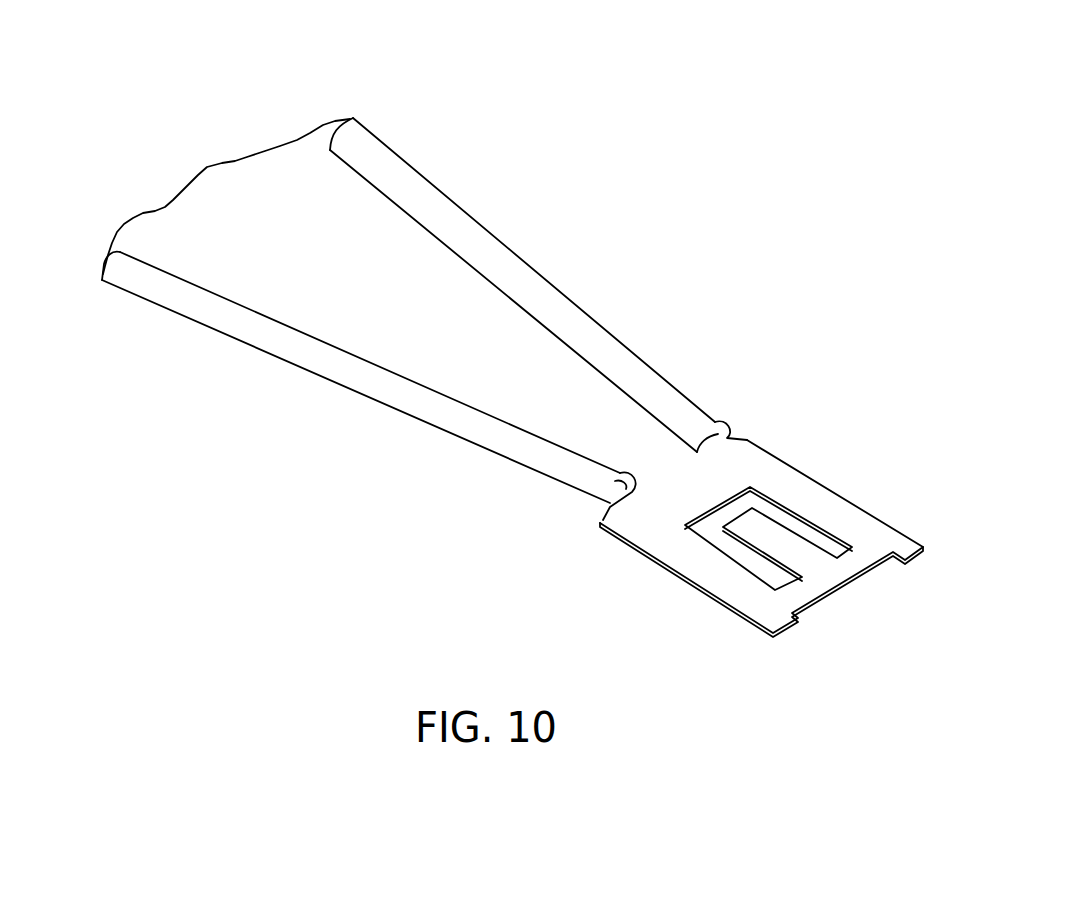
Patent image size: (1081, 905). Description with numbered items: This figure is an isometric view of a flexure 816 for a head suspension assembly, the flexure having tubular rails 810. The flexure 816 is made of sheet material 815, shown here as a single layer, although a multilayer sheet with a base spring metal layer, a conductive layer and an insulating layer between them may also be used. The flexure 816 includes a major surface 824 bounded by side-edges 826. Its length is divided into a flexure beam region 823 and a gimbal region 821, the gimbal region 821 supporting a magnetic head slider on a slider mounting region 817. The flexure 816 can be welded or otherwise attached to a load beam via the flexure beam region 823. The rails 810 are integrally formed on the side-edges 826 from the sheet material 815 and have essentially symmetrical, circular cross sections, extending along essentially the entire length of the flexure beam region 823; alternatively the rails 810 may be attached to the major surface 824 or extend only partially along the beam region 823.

The tubular rails 810 is at (408, 178).
The sheet material 815 is at (465, 373).
The flexure 816 is at (497, 322).
The slider mounting region 817 is at (763, 533).
The gimbal region 821 is at (907, 505).
The flexure beam region 823 is at (436, 292).
The major surface 824 is at (195, 253).
The side-edges 826 is at (458, 200).